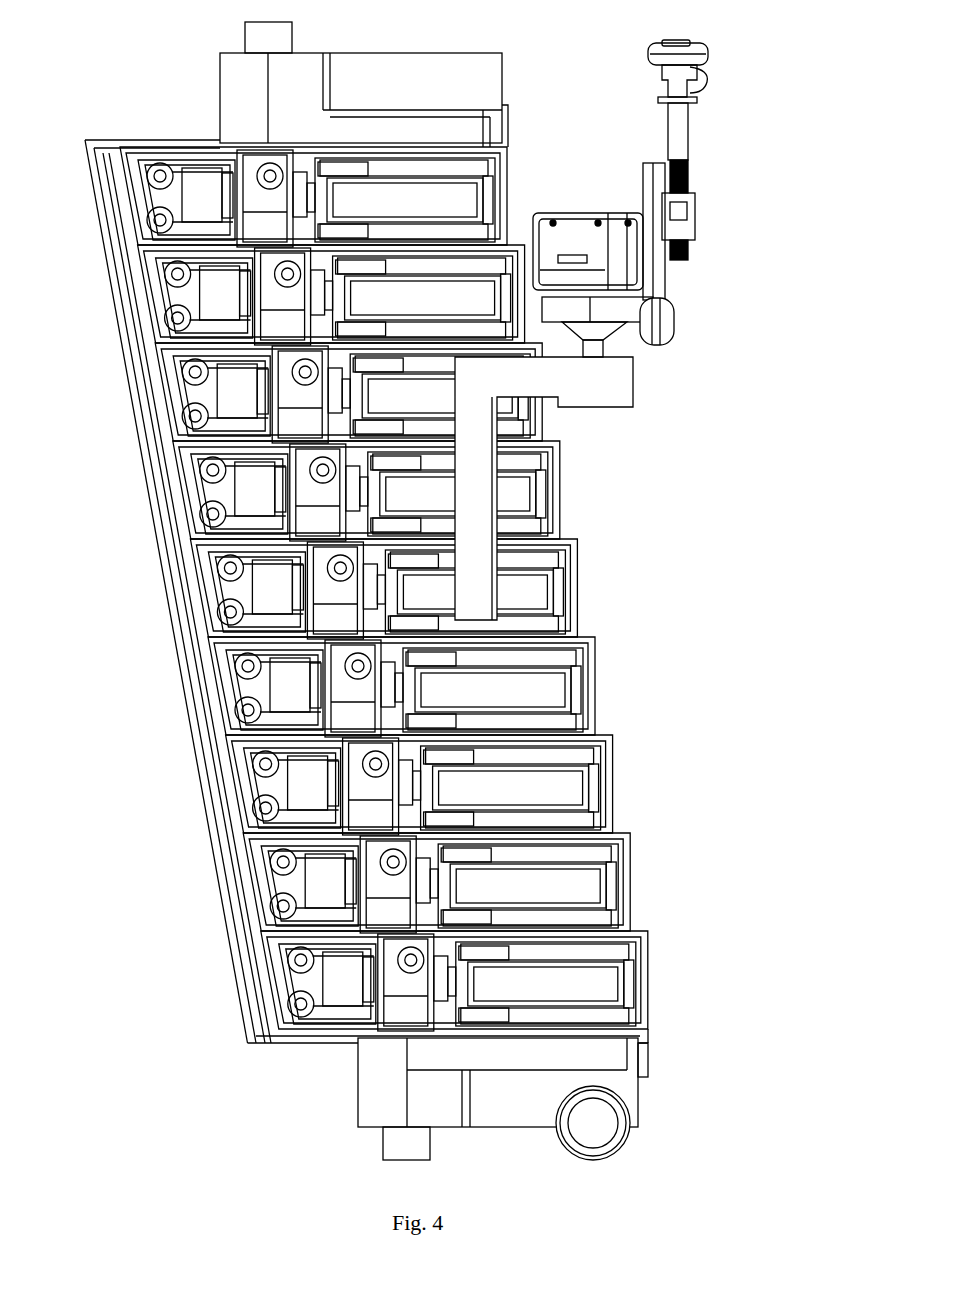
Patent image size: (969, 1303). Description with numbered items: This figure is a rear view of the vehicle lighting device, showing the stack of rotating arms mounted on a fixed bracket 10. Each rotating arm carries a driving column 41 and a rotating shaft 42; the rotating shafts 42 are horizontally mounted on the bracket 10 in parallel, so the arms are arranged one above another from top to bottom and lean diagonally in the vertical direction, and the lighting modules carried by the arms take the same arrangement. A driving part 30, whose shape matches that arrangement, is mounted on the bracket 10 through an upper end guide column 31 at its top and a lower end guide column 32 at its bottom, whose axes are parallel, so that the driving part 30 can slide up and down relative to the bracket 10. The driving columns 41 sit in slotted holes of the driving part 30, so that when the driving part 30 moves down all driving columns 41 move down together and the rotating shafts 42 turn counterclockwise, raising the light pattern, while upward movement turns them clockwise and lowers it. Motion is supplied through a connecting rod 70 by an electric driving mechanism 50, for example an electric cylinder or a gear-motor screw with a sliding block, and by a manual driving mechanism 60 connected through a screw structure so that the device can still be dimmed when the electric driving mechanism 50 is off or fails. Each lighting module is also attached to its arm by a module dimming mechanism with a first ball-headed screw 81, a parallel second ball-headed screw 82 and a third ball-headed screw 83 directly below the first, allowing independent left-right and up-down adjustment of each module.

The bracket 10 is at (405, 589).
The driving part 30 is at (268, 328).
The upper end guide column 31 is at (262, 40).
The lower end guide column 32 is at (405, 1148).
The driving column 41 is at (203, 524).
The rotating shaft 42 is at (627, 927).
The electric driving mechanism 50 is at (600, 257).
The manual driving mechanism 60 is at (680, 148).
The connecting rod 70 is at (482, 497).
The first ball-headed screw 81 is at (165, 695).
The second ball-headed screw 82 is at (223, 773).
The third ball-headed screw 83 is at (202, 724).